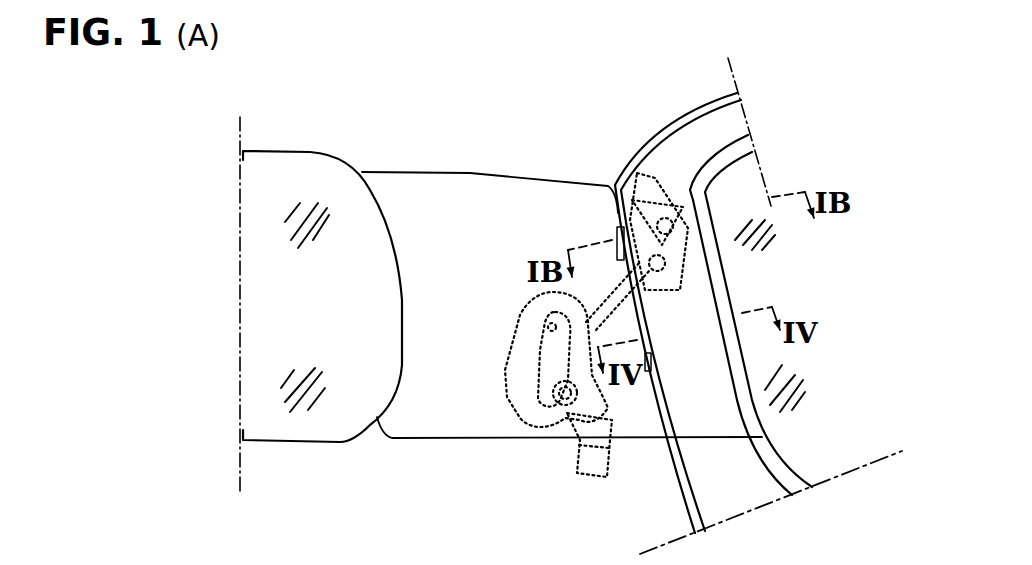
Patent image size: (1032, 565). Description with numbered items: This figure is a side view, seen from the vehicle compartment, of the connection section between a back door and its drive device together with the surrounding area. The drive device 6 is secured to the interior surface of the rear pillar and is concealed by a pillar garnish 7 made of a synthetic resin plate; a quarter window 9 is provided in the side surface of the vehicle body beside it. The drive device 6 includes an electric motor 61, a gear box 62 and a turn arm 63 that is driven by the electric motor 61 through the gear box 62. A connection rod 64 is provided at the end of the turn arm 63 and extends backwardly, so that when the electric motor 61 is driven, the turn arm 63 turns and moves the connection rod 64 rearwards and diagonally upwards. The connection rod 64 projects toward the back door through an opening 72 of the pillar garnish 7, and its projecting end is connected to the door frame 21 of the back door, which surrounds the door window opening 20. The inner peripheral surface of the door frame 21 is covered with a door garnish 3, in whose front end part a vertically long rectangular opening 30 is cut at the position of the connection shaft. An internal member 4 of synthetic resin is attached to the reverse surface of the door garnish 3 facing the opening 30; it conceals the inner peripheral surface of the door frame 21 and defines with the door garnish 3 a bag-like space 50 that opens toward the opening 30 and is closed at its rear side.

The quarter window 9 is at (295, 185).
The pillar garnish 7 is at (430, 252).
The opening 72 is at (617, 237).
The opening 30 is at (610, 187).
The internal member 4 is at (668, 207).
The door frame 21 is at (707, 136).
The space 50 is at (673, 240).
The connection rod 64 is at (605, 315).
The door window opening 20 is at (820, 385).
The door garnish 3 is at (710, 403).
The gear box 62 is at (520, 330).
The turn arm 63 is at (520, 398).
The drive device 6 is at (547, 418).
The electric motor 61 is at (590, 465).